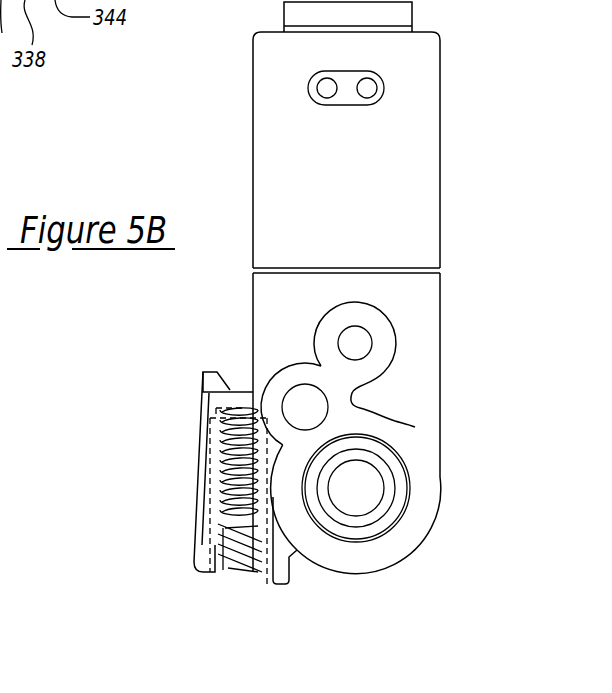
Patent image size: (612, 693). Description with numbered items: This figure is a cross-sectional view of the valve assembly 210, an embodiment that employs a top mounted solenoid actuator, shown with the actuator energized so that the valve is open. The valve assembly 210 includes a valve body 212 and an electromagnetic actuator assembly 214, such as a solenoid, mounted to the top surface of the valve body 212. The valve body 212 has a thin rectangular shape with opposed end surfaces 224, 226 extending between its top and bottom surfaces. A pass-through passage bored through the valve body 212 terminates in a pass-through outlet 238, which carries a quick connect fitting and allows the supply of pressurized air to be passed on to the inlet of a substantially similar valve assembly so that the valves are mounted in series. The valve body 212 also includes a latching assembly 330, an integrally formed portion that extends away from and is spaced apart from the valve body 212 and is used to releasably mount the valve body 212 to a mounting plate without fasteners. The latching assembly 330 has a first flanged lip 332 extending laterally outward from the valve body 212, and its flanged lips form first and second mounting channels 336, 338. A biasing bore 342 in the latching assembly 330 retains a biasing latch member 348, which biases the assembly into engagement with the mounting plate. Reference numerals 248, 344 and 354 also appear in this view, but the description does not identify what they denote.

The valve assembly 210 is at (240, 93).
The valve body 212 is at (441, 307).
The electromagnetic actuator assembly 214 is at (253, 182).
The end surface 224 is at (441, 363).
The end surface 226 is at (252, 297).
The pass-through outlet 238 is at (385, 497).
The locating pin aperture 248 is at (327, 413).
The latching assembly 330 is at (212, 412).
The first flanged lip 332 is at (203, 373).
The first mounting channel 336 is at (242, 390).
The second mounting channel 338 is at (240, 575).
The biasing bore 342 is at (213, 494).
The clamp foot 344 is at (216, 575).
The biasing latch member 348 is at (197, 455).
The housing foot 354 is at (266, 586).